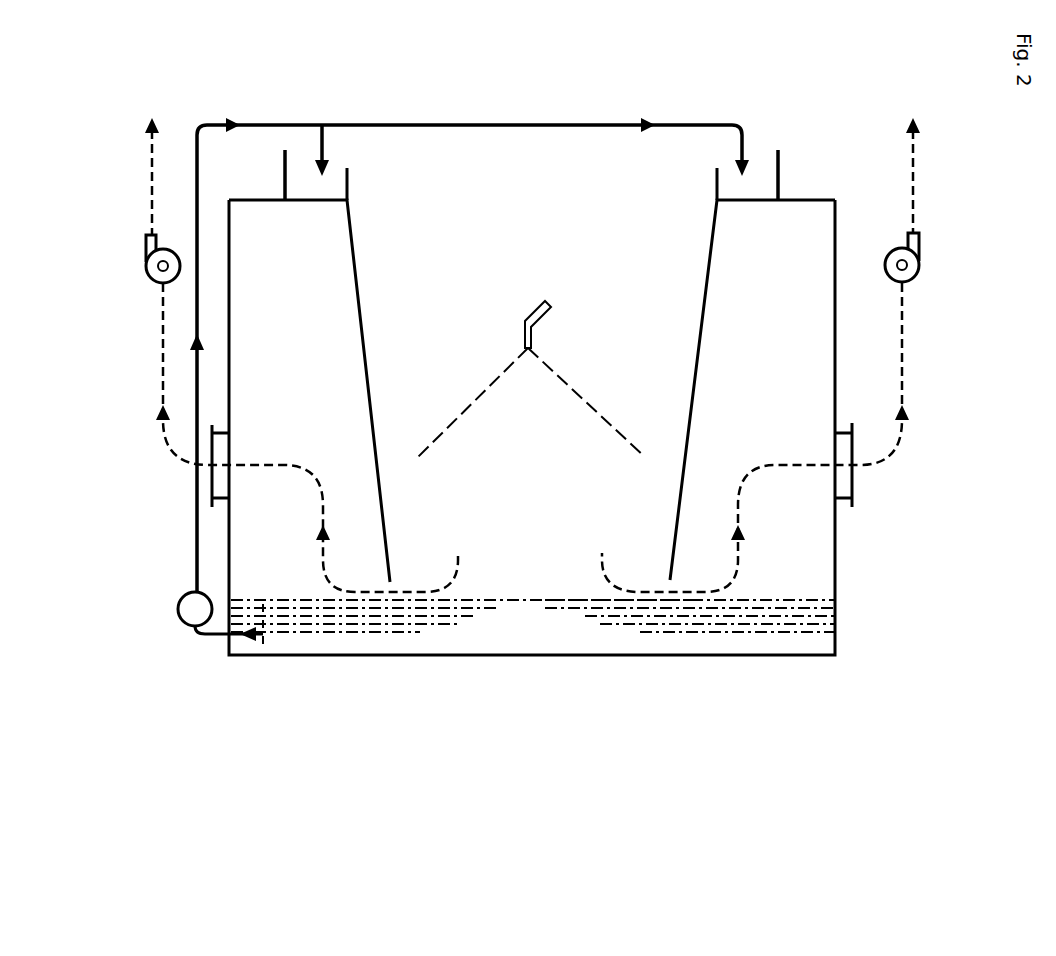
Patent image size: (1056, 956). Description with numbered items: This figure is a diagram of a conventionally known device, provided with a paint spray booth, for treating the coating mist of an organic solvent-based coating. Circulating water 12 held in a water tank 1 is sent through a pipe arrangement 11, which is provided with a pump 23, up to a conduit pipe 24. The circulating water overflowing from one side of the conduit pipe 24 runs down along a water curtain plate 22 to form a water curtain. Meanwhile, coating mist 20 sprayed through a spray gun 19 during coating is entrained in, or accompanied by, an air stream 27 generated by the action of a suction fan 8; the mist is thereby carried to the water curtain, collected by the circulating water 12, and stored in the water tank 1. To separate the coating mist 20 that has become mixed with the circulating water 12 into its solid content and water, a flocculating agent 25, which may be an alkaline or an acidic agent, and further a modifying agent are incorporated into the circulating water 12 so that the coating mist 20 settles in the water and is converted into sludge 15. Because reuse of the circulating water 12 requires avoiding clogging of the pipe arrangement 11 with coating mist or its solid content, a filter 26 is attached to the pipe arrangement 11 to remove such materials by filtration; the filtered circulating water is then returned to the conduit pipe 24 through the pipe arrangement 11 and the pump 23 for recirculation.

The water tank 1 is at (448, 655).
The suction fan 8 is at (137, 236).
The pipe arrangement 11 is at (197, 405).
The circulating water 12 is at (510, 615).
The sludge 15 is at (317, 623).
The spray gun 19 is at (537, 307).
The coating mist 20 is at (468, 405).
The water curtain plate 22 is at (362, 280).
The pump 23 is at (180, 607).
The conduit pipe 24 is at (300, 158).
The flocculating agent 25 is at (618, 616).
The filter 26 is at (263, 645).
The air stream 27 is at (163, 320).